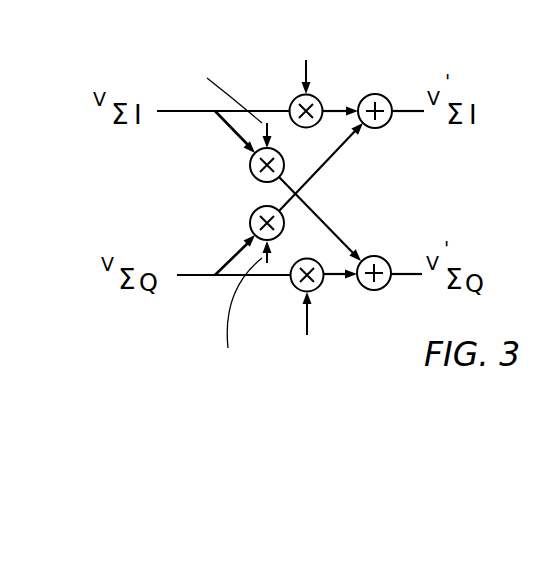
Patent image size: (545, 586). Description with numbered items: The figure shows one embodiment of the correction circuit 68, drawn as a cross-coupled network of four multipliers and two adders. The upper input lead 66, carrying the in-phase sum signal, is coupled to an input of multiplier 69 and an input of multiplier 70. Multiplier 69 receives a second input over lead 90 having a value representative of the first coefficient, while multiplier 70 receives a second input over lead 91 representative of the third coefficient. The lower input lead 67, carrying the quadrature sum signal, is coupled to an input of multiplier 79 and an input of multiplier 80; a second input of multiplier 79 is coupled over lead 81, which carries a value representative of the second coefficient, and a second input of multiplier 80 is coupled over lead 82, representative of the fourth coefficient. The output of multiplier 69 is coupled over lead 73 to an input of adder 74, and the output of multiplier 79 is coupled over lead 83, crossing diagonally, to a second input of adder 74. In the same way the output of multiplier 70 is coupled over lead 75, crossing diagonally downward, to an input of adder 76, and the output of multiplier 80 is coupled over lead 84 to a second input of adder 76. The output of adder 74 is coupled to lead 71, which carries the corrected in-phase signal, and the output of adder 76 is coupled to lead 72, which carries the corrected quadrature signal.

The lead 66 is at (195, 111).
The lead 67 is at (198, 277).
The correction circuit 68 is at (237, 45).
The multiplier 69 is at (290, 105).
The multiplier 70 is at (250, 165).
The lead 71 is at (408, 115).
The lead 72 is at (408, 277).
The lead 73 is at (337, 93).
The adder 74 is at (374, 128).
The lead 75 is at (327, 228).
The adder 76 is at (375, 256).
The multiplier 79 is at (250, 228).
The multiplier 80 is at (291, 286).
The lead 81 is at (268, 260).
The lead 82 is at (308, 310).
The lead 83 is at (322, 167).
The lead 84 is at (333, 283).
The lead 90 is at (307, 67).
The lead 91 is at (270, 125).